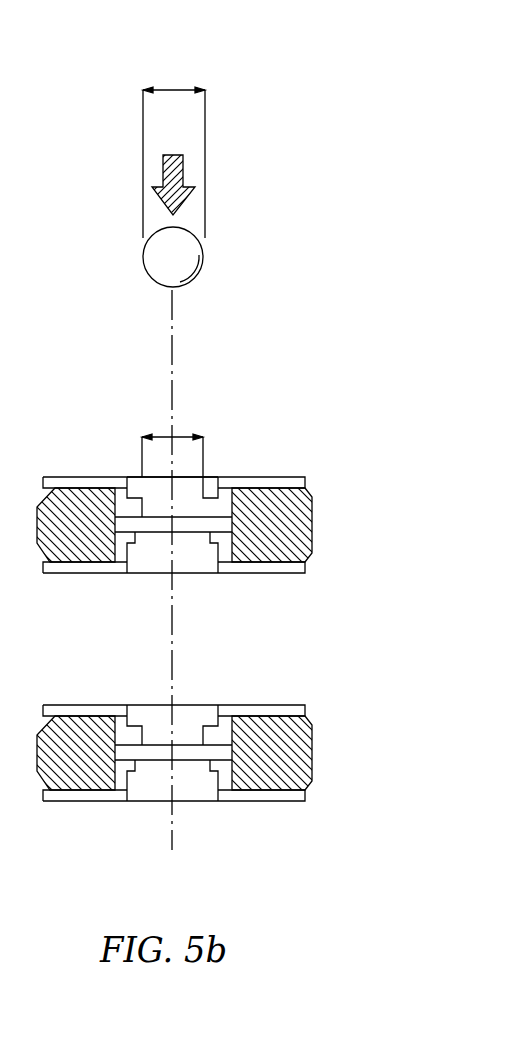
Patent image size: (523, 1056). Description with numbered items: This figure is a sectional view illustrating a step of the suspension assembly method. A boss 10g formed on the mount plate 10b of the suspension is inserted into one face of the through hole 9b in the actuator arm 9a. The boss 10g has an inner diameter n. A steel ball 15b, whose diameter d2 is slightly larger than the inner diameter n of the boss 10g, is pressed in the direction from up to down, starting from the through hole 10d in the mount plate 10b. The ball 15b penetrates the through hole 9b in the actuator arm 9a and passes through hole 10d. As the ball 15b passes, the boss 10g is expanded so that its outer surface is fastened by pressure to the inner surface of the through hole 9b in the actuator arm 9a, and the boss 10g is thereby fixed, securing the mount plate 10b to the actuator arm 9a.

The steel ball 15b is at (152, 263).
The through hole 10d is at (210, 480).
The boss 10g is at (203, 497).
The mount plate 10b is at (292, 477).
The actuator arm 9a is at (307, 527).
The through hole 9b is at (197, 828).
The diameter of steel ball d2 is at (173, 88).
The inner diameter of boss n is at (172, 425).